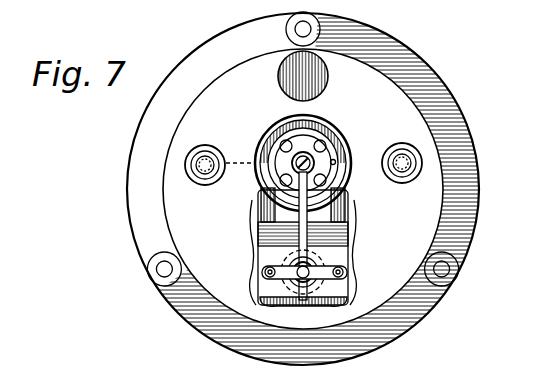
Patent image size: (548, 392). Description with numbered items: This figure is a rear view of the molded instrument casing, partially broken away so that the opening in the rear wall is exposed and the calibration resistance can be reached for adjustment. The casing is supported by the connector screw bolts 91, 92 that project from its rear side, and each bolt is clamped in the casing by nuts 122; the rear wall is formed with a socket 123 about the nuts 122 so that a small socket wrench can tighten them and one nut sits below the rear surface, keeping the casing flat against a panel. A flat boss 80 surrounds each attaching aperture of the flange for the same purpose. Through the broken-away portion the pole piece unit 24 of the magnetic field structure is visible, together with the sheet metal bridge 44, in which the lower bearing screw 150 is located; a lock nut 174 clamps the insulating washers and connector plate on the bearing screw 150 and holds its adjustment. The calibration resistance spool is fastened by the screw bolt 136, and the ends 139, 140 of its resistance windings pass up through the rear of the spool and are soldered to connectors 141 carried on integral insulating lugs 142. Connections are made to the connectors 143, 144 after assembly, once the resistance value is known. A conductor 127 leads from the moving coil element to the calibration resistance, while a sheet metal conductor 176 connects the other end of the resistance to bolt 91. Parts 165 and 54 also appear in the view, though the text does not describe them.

The pole piece unit 24 is at (337, 303).
The boss 80 is at (287, 27).
The nuts 122 is at (188, 160).
The connector screw bolt 91 is at (190, 171).
The socket 123 is at (200, 182).
The connector screw bolt 92 is at (424, 161).
The conductor 176 is at (282, 167).
The winding end 140 is at (310, 149).
The connectors 141 is at (305, 126).
The insulating lugs 142 is at (290, 134).
The connector 143 is at (292, 152).
The winding end 139 is at (282, 183).
The screw bolt 136 is at (308, 162).
The connector 144 is at (398, 219).
The conductor 127 is at (262, 240).
The pivot bushing 165 is at (338, 262).
The pivot pin 54 is at (340, 238).
The bridge 44 is at (346, 272).
The lower bearing screw 150 is at (266, 272).
The lock nut 174 is at (312, 300).